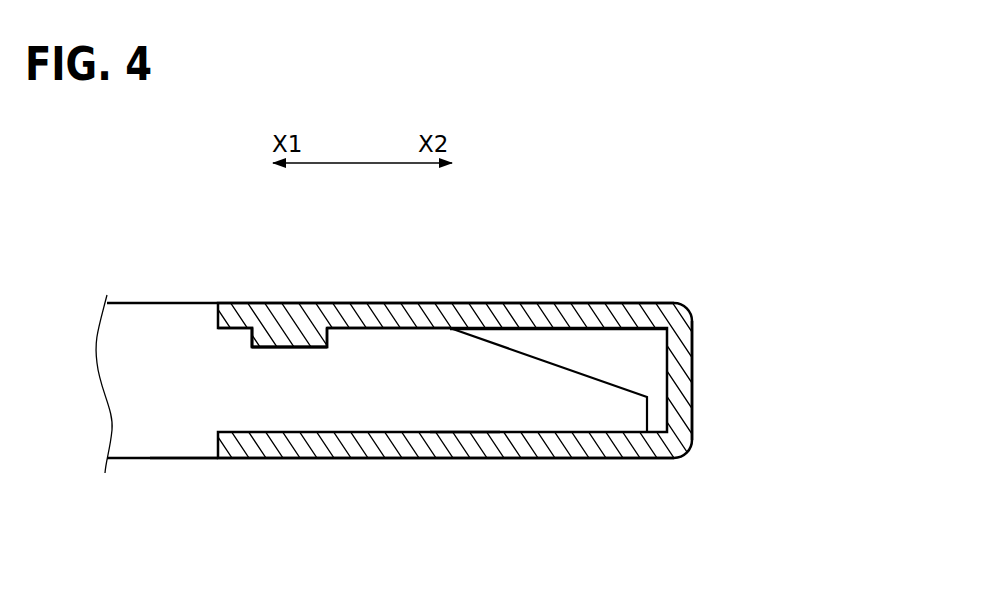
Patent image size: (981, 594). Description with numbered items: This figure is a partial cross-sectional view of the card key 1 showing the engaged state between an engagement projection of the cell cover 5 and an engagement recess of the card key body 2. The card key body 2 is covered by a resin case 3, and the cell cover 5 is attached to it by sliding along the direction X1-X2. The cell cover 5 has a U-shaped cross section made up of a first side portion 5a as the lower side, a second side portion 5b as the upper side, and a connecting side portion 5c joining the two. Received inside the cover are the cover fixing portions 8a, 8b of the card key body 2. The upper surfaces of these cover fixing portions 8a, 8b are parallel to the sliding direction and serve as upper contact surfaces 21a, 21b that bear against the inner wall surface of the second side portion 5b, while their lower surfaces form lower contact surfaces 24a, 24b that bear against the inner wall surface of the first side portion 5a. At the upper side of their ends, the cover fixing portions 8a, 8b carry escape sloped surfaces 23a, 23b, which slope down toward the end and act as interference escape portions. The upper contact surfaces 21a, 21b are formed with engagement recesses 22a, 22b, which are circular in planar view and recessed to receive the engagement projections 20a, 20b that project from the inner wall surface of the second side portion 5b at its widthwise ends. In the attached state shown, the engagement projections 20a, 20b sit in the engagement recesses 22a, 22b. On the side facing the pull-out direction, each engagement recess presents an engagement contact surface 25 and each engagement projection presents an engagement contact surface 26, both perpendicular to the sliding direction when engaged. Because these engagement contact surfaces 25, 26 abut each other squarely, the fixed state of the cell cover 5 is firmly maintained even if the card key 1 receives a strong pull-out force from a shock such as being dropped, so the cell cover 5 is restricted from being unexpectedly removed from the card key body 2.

The card key 1 is at (695, 242).
The card key body 2 is at (165, 462).
The resin case 3 is at (145, 313).
The cell cover 5 is at (460, 362).
The first side portion 5a is at (417, 459).
The second side portion 5b is at (478, 304).
The connecting side portion 5c is at (692, 376).
The cover fixing portion 8a is at (540, 428).
The cover fixing portion 8b is at (513, 408).
The engagement projection 20a is at (315, 274).
The engagement projection 20b is at (289, 333).
The upper contact surface 21a is at (422, 281).
The upper contact surface 21b is at (400, 328).
The engagement recess 22a is at (218, 292).
The engagement recess 22b is at (262, 334).
The escape sloped surface 23a is at (558, 323).
The escape sloped surface 23b is at (550, 362).
The lower contact surface 24a is at (493, 487).
The lower contact surface 24b is at (452, 432).
The engagement contact surface 25 is at (327, 331).
The engagement contact surface 26 is at (310, 347).